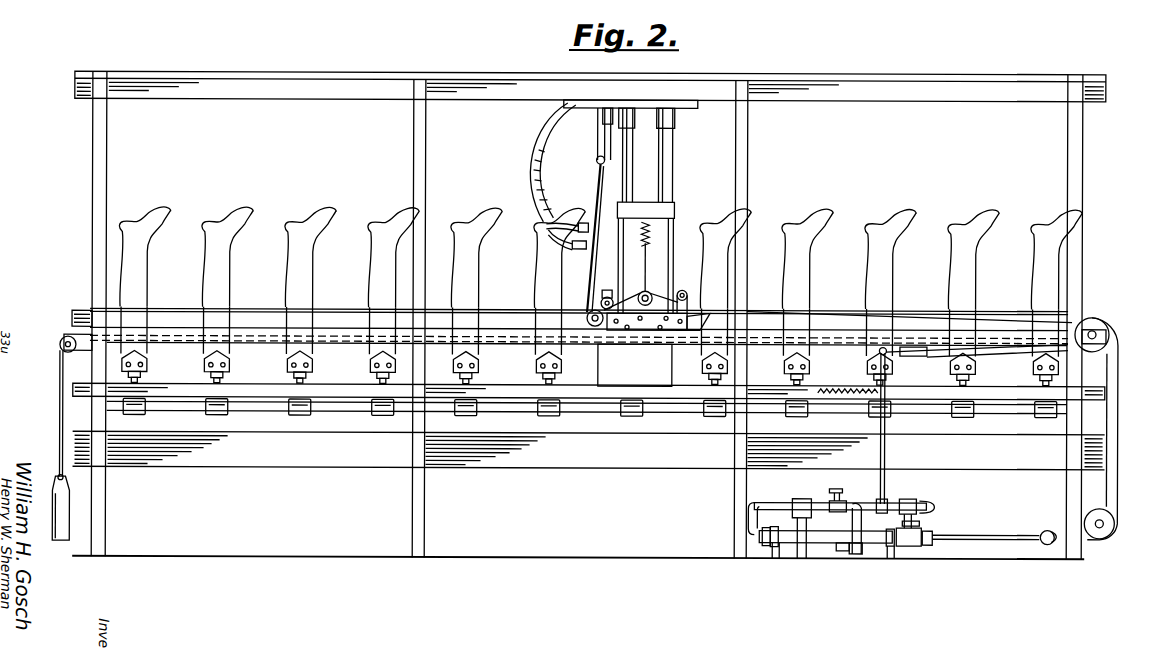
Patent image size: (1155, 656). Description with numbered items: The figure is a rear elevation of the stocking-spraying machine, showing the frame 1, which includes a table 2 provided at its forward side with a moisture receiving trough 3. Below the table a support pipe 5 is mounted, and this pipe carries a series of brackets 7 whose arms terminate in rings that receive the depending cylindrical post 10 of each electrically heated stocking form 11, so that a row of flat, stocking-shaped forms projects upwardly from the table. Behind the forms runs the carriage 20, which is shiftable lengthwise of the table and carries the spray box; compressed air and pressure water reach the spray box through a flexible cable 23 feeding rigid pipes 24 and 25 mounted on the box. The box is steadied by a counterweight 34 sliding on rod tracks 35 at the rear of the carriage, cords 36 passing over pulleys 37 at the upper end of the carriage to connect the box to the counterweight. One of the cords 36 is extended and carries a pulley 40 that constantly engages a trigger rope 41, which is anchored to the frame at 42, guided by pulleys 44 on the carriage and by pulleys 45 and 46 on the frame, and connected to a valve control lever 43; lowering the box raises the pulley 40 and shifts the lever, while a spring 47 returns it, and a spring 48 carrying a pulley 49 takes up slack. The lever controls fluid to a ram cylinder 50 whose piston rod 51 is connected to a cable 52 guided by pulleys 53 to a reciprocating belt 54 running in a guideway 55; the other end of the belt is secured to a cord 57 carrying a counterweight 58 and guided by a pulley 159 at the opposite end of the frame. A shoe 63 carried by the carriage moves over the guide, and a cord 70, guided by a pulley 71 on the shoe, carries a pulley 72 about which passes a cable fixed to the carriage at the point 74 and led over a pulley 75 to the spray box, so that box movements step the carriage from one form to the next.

The frame 1 is at (1082, 198).
The table 2 is at (320, 392).
The moisture receiving trough 3 is at (1017, 460).
The support pipe 5 is at (1010, 418).
The bracket 7 is at (575, 416).
The cylindrical post 10 is at (538, 370).
The stocking form 11 is at (370, 268).
The carriage 20 is at (654, 349).
The flexible cable 23 is at (532, 170).
The rigid air pipe 24 is at (582, 221).
The rigid water pipe 25 is at (546, 249).
The counterweight 34 is at (653, 208).
The rod tracks 35 is at (660, 237).
The cords 36 is at (636, 164).
The pulleys 37 is at (639, 107).
The pulley 40 is at (652, 292).
The trigger rope 41 is at (494, 312).
The anchor 42 is at (80, 312).
The valve control lever 43 is at (886, 452).
The pulleys 44 is at (605, 301).
The guide pulley 45 is at (1082, 320).
The pulley 46 is at (914, 358).
The spring 47 is at (836, 386).
The spring 48 is at (650, 238).
The pulley 49 is at (596, 238).
The ram cylinder 50 is at (828, 546).
The piston rod 51 is at (962, 540).
The cable 52 is at (1116, 470).
The pulleys 53 is at (1118, 370).
The reciprocating belt 54 is at (993, 330).
The guideway 55 is at (902, 333).
The cord 57 is at (58, 395).
The counterweight 58 is at (62, 510).
The shoe 63 is at (690, 340).
The cord 70 is at (594, 184).
The pulley 71 is at (592, 327).
The pulley 72 is at (596, 158).
The fixing point 74 is at (567, 103).
The pulley 75 is at (600, 104).
The pulley 159 is at (58, 350).